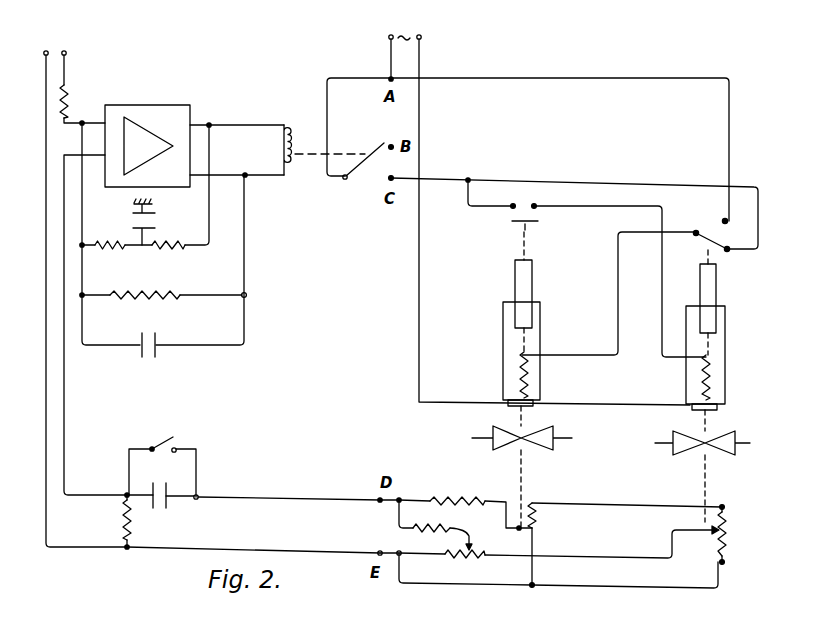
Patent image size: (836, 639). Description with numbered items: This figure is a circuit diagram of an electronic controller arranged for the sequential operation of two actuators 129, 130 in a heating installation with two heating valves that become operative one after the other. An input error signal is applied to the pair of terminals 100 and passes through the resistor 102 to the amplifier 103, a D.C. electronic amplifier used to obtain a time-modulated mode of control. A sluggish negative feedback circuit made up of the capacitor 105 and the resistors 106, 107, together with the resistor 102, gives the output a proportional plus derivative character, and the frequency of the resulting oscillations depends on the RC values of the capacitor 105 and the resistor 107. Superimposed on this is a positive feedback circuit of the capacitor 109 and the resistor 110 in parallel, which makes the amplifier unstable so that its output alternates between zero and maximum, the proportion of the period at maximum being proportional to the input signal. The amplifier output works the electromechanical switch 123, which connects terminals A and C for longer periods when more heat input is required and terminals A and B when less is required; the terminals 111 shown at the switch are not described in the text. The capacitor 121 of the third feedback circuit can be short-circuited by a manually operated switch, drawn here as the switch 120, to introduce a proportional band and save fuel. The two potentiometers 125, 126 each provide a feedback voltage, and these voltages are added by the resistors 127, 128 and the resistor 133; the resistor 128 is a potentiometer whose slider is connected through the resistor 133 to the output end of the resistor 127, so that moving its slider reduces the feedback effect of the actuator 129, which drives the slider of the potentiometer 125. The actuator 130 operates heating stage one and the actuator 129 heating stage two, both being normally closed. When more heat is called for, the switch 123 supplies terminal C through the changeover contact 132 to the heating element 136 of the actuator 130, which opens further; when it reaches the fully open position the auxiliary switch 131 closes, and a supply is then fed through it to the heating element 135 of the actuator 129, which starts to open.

The input terminals 100 is at (53, 43).
The resistor 102 is at (66, 100).
The amplifier 103 is at (140, 105).
The capacitor 105 is at (150, 223).
The resistor 106 is at (110, 255).
The resistor 107 is at (168, 255).
The capacitor 109 is at (146, 360).
The resistor 110 is at (145, 303).
The AC supply terminals 111 is at (424, 39).
The switch 120 is at (173, 437).
The capacitor 121 is at (158, 508).
The electromechanical switch 123 is at (359, 176).
The potentiometer 125 is at (703, 535).
The potentiometer 126 is at (553, 517).
The resistor 127 is at (457, 489).
The potentiometer 128 is at (465, 566).
The actuator 129 is at (716, 283).
The actuator 130 is at (533, 283).
The auxiliary switch 131 is at (538, 212).
The auxiliary switch 132 is at (707, 235).
The resistor 133 is at (445, 525).
The heating element 135 is at (702, 382).
The solenoid coil resistor 136 is at (528, 375).